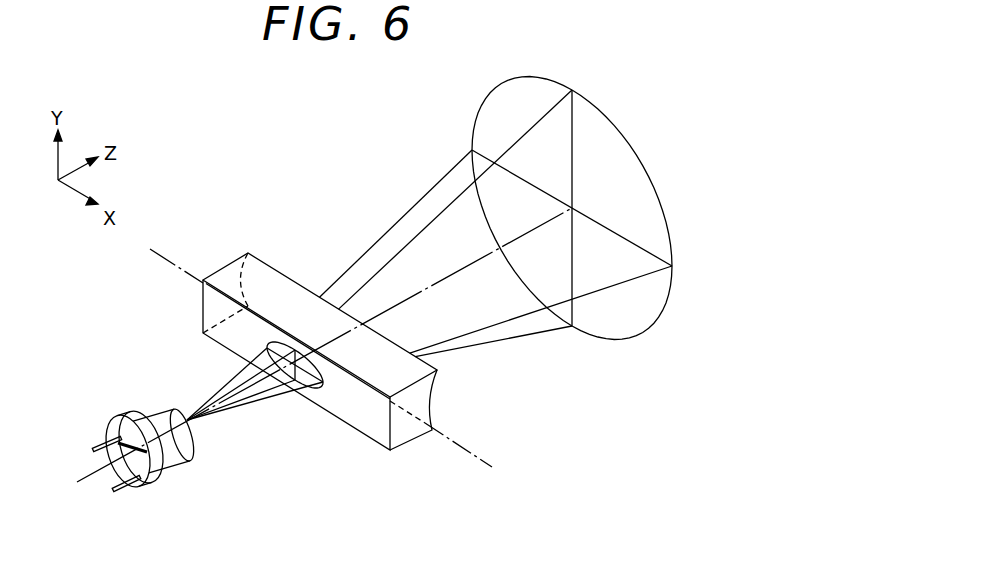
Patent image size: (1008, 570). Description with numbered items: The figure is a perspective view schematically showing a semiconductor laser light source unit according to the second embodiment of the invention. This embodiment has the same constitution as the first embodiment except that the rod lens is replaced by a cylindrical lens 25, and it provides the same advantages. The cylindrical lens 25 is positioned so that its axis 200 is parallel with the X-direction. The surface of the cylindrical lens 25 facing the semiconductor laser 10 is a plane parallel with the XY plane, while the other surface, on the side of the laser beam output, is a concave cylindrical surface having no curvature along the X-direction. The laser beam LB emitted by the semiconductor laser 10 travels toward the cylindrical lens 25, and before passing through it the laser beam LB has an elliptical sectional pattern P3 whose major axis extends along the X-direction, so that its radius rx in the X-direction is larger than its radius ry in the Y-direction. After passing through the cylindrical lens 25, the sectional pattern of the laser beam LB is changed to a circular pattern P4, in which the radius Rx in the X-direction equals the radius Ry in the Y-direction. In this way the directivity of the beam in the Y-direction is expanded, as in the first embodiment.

The semiconductor laser 10 is at (180, 448).
The cylindrical lens 25 is at (412, 428).
The axis 200 is at (492, 450).
The laser beam LB is at (242, 407).
The elliptical sectional pattern P3 is at (300, 384).
The circular pattern P4 is at (612, 327).
The minor-axis radius of pattern P3 ry is at (284, 392).
The major-axis radius of pattern P3 rx is at (318, 386).
The Y-direction radius of pattern P4 Ry is at (573, 138).
The X-direction radius of pattern P4 Rx is at (641, 252).